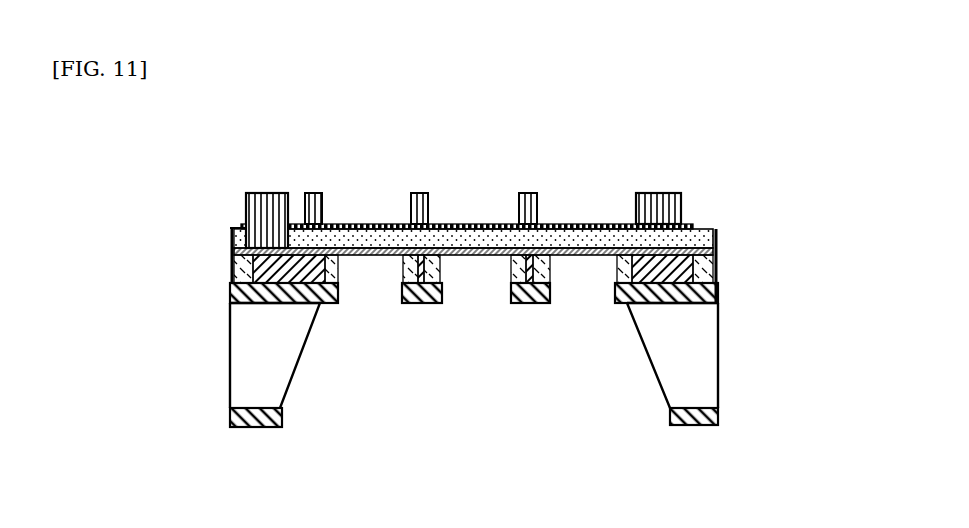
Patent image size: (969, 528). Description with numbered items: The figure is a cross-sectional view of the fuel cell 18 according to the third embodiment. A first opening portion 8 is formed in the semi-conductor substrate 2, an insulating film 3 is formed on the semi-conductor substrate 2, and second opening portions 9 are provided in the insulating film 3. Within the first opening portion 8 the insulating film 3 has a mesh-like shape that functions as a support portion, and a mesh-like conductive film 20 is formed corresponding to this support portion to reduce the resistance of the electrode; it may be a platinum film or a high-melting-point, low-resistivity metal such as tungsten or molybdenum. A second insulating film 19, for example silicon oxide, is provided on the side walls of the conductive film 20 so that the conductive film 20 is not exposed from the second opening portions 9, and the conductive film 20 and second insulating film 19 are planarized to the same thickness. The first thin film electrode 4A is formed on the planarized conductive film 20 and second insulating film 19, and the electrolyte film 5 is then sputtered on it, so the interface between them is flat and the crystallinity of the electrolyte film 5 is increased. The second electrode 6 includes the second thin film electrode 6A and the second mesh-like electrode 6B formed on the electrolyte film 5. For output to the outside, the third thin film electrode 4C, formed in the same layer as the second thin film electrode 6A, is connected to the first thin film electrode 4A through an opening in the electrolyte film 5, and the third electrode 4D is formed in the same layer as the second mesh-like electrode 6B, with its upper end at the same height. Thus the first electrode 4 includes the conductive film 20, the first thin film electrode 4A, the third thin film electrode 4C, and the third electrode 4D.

The semi-conductor substrate 2 is at (710, 355).
The insulating film 3 is at (717, 297).
The first electrode 4 is at (368, 197).
The first thin film electrode 4A is at (232, 249).
The third thin film electrode 4C is at (242, 224).
The third electrode 4D is at (246, 201).
The electrolyte film 5 is at (697, 243).
The second electrode 6 is at (540, 187).
The second thin film electrode 6A is at (690, 226).
The second mesh-like electrode 6B is at (672, 197).
The first opening portion 8 is at (588, 362).
The second opening portions 9 is at (477, 292).
The fuel cell 18 is at (451, 282).
The second insulating film 19 is at (228, 276).
The mesh-like conductive film 20 is at (228, 266).